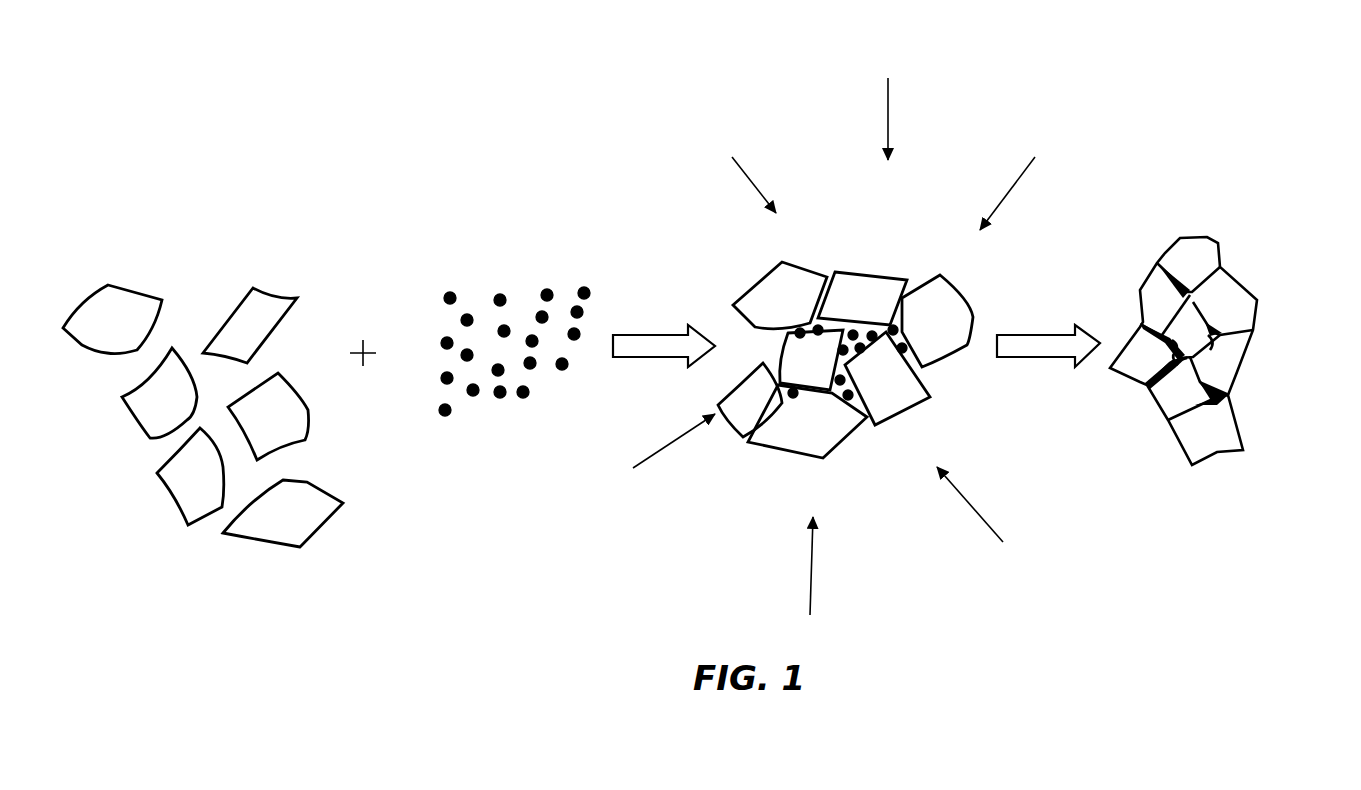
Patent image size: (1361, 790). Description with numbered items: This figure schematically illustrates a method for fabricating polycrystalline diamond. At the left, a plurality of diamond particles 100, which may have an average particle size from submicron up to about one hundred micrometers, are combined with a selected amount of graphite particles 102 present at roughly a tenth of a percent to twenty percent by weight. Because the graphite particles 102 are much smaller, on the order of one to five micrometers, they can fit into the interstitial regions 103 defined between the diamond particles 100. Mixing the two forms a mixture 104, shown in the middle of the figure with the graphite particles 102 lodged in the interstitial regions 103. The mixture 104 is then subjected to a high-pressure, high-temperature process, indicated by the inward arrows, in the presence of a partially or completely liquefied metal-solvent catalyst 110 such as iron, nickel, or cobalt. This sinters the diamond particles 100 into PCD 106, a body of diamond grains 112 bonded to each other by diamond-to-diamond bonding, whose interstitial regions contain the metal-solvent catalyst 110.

The diamond particles 100 is at (263, 307).
The graphite particles 102 is at (450, 298).
The interstitial regions 103 is at (787, 405).
The mixture 104 is at (891, 235).
The PCD 106 is at (1248, 218).
The metal-solvent catalyst 110 is at (1230, 397).
The bonded diamond grain 112 is at (1205, 437).